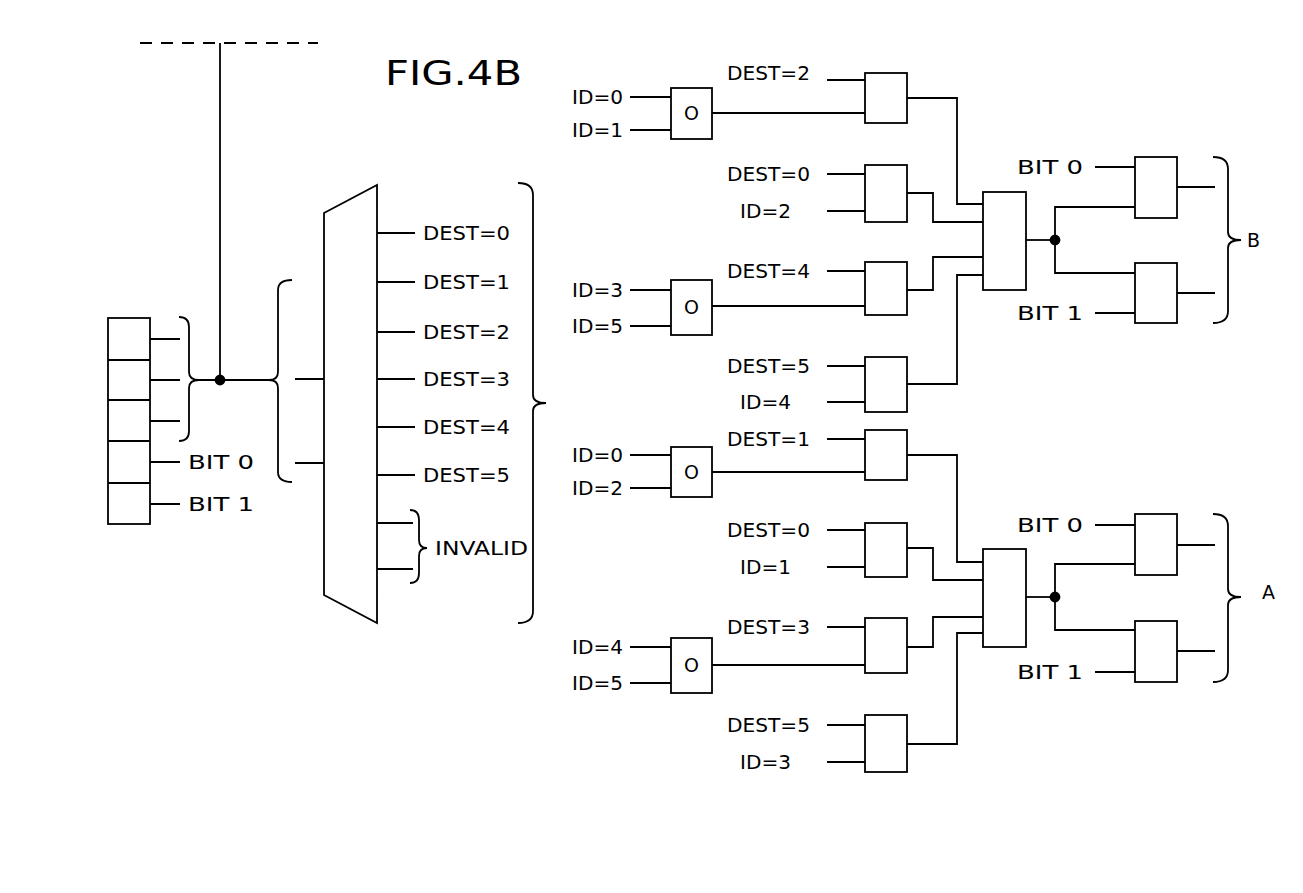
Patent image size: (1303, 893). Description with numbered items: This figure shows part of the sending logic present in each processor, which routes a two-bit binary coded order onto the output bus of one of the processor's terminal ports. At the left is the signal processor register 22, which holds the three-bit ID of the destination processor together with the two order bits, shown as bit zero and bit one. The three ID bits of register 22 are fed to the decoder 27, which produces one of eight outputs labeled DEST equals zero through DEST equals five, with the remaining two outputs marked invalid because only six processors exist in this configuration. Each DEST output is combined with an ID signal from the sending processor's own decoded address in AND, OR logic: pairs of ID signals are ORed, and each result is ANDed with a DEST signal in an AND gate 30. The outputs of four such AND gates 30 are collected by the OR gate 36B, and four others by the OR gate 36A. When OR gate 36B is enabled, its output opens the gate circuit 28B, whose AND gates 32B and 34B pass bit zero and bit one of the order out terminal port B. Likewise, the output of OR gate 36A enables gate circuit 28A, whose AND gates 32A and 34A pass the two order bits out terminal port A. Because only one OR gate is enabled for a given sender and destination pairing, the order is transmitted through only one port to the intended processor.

The signal processor (SIG-P) register 22 is at (118, 518).
The decoder 27 is at (352, 583).
The AND gate 30 is at (890, 170).
The OR gate 36B is at (1000, 205).
The OR gate 36A is at (1002, 562).
The gate circuit 28B is at (1146, 224).
The gate circuit 28A is at (1146, 576).
The AND gate 32B is at (1157, 170).
The AND gate 32A is at (1160, 518).
The AND gate 34B is at (1158, 315).
The AND gate 34A is at (1155, 672).